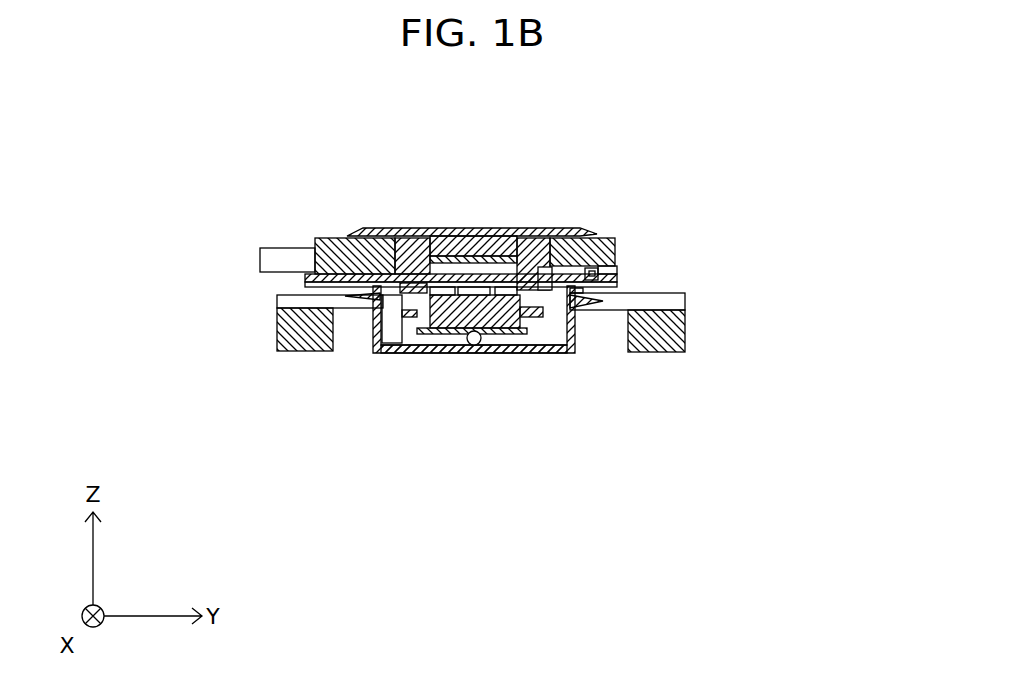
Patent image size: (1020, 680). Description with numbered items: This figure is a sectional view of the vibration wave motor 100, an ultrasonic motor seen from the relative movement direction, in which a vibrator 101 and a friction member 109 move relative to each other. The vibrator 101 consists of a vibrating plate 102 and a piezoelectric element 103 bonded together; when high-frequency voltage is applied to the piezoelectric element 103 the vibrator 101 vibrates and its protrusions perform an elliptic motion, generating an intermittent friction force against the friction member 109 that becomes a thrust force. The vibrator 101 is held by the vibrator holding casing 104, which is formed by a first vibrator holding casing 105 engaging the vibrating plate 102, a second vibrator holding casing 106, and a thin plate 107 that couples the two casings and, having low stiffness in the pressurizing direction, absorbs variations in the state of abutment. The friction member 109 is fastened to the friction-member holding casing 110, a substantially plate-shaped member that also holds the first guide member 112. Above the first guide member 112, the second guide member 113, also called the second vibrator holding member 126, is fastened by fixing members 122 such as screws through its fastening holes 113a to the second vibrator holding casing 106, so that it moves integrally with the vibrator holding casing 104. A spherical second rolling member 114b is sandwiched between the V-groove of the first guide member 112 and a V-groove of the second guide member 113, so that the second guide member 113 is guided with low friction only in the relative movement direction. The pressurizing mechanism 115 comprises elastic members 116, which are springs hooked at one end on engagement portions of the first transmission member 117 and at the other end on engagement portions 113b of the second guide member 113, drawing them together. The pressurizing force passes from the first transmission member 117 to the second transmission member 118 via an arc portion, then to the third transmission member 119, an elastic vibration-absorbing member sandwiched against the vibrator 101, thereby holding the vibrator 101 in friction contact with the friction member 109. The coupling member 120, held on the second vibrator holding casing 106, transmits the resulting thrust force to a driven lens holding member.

The vibration wave motor 100 is at (189, 155).
The vibrator 101 is at (108, 312).
The vibrating plate 102 is at (383, 280).
The piezoelectric element 103 is at (382, 287).
The vibrator holding casing 104 is at (535, 133).
The first vibrator holding casing 105 is at (537, 255).
The second vibrator holding casing 106 is at (603, 242).
The thin plate 107 is at (528, 232).
The friction member 109 is at (425, 346).
The friction-member holding casing 110 is at (685, 323).
The first guide member 112 is at (502, 335).
The second guide member 113 is at (532, 353).
The second vibrator holding member 126 is at (515, 372).
The fastening holes 113a is at (620, 280).
The engagement portions 113b is at (580, 312).
The second rolling member 114b is at (475, 342).
The pressurizing mechanism 115 is at (285, 133).
The elastic members 116 is at (352, 236).
The first transmission member 117 is at (408, 236).
The second transmission member 118 is at (443, 238).
The third transmission member 119 is at (468, 236).
The coupling member 120 is at (260, 260).
The fixing members 122 is at (617, 270).